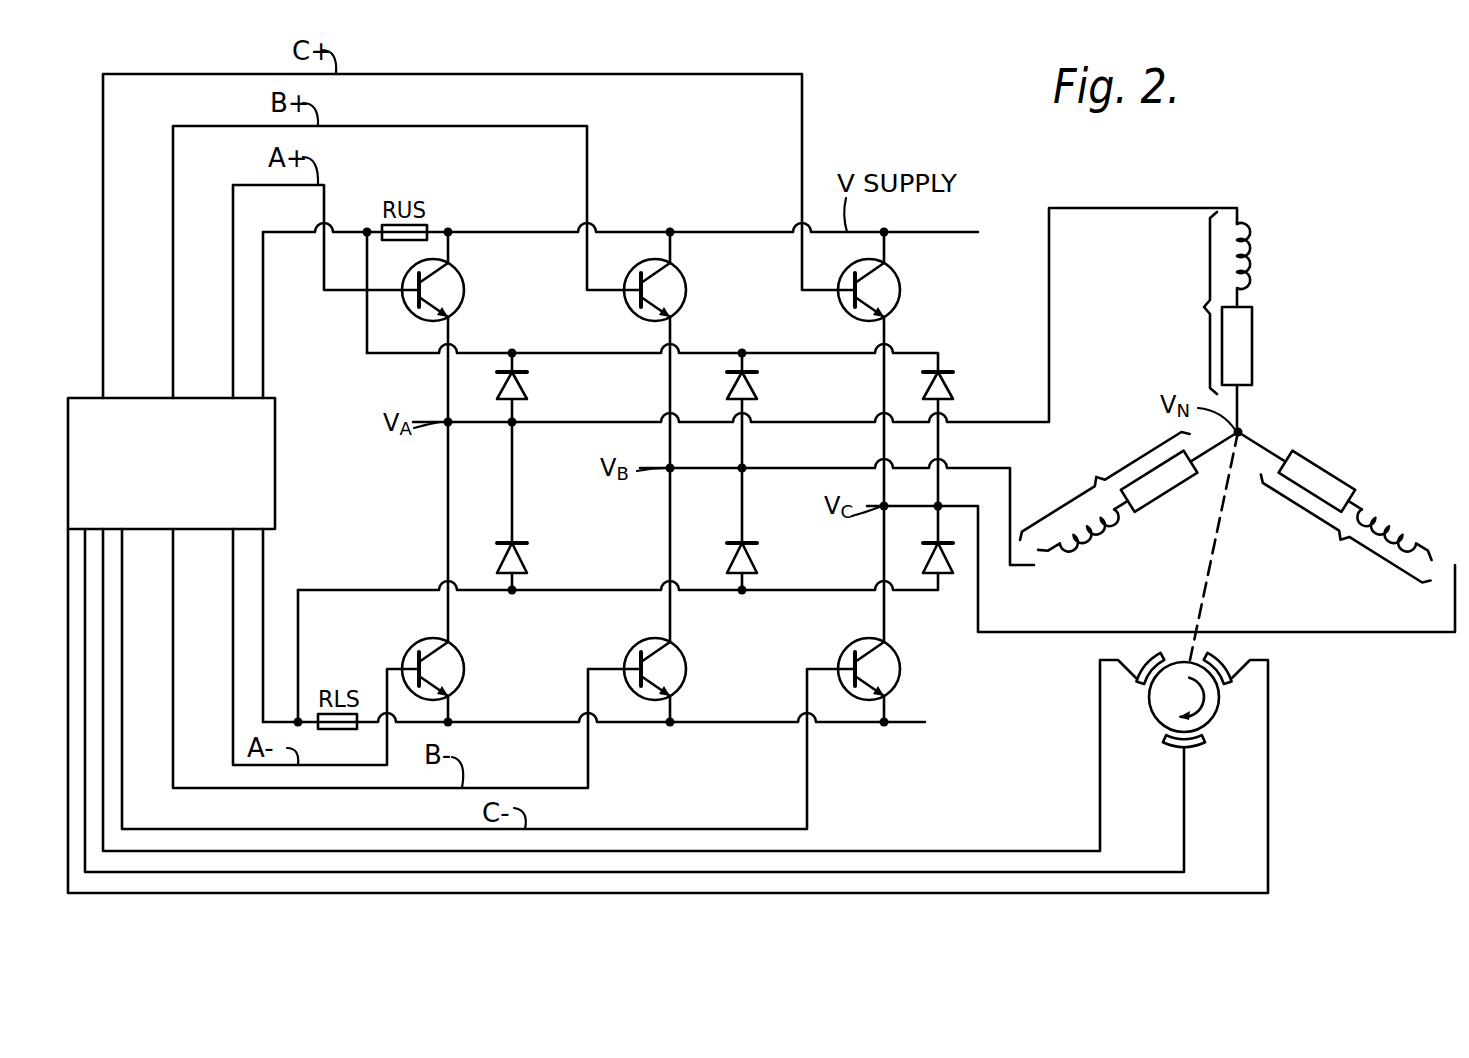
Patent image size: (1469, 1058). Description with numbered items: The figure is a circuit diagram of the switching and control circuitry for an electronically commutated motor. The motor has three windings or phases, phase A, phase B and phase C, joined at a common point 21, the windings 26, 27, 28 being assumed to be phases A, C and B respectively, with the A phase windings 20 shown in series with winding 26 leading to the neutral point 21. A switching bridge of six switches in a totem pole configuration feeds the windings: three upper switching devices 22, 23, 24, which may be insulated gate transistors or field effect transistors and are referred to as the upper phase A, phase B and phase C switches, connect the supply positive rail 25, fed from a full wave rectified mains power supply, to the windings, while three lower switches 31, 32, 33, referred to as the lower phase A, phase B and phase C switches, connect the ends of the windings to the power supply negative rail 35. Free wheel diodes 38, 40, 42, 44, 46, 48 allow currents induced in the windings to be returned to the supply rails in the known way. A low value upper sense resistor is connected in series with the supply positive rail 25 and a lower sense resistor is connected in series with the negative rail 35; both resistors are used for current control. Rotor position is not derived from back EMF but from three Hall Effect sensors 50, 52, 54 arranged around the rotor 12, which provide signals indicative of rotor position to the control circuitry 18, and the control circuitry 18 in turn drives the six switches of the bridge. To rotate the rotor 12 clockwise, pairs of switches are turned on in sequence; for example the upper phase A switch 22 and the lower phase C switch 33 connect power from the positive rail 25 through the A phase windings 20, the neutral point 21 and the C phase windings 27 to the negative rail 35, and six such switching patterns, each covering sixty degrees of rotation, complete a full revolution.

The rotor 12 is at (1184, 697).
The control circuitry 18 is at (171, 463).
The A phase windings 20 is at (1273, 312).
The common point 21 is at (1245, 427).
The switching device 22 is at (463, 300).
The switching device 23 is at (685, 300).
The switching device 24 is at (899, 300).
The supply positive rail 25 is at (636, 232).
The winding 26 is at (1258, 352).
The winding 27 is at (1345, 478).
The winding 28 is at (1152, 512).
The switch 31 is at (424, 645).
The switch 32 is at (646, 645).
The switch 33 is at (860, 645).
The power supply negative rail 35 is at (635, 723).
The free wheel diode 38 is at (528, 387).
The free wheel diode 40 is at (758, 387).
The free wheel diode 42 is at (954, 387).
The free wheel diode 44 is at (528, 560).
The free wheel diode 46 is at (758, 560).
The free wheel diode 48 is at (955, 563).
The Hall Effect sensor 50 is at (1138, 688).
The Hall Effect sensor 52 is at (1193, 752).
The Hall Effect sensor 54 is at (1231, 688).